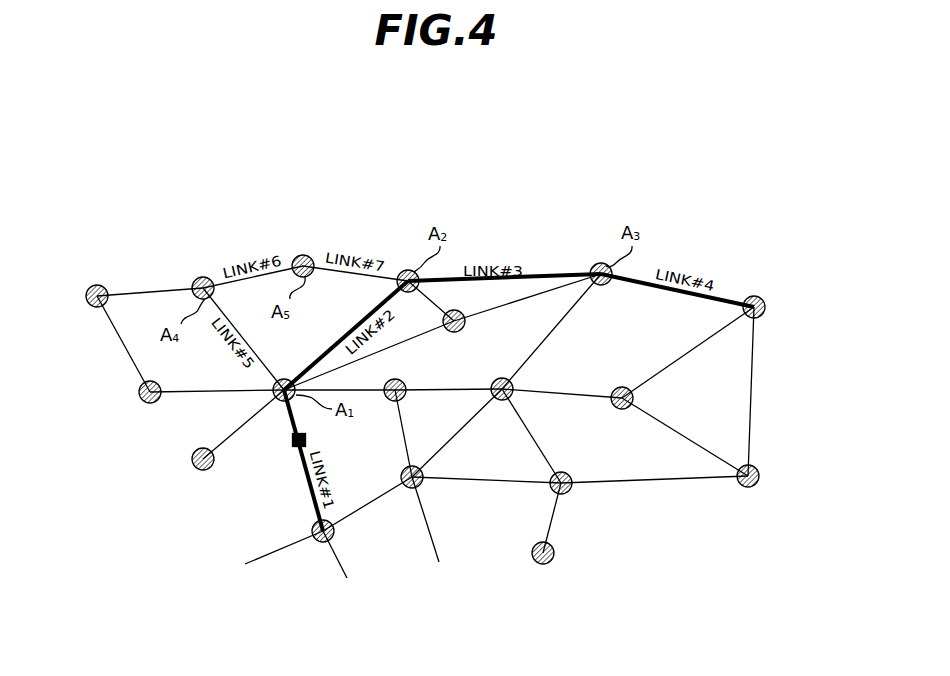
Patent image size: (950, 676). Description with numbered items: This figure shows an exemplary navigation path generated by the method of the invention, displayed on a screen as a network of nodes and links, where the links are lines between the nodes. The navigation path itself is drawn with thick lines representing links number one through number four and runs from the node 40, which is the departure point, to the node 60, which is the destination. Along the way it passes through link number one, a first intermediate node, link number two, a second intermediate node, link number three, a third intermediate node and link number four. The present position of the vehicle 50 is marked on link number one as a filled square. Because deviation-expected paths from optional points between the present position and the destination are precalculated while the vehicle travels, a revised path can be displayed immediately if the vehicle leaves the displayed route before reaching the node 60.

The node 40 is at (320, 543).
The present position of the vehicle 50 is at (292, 446).
The node 60 is at (758, 296).